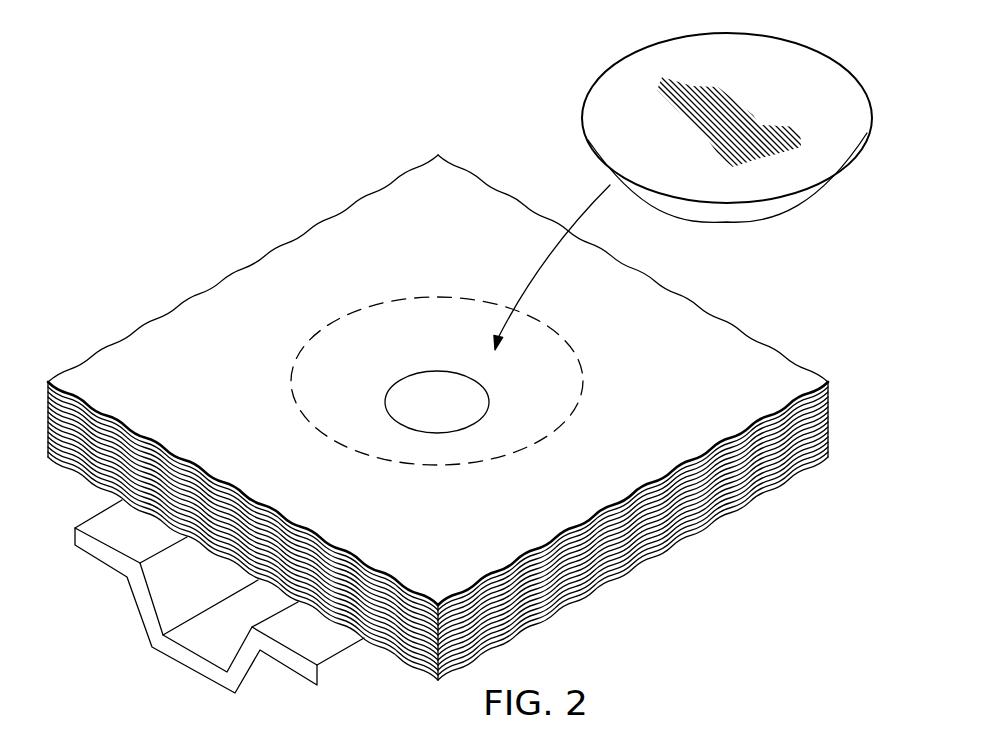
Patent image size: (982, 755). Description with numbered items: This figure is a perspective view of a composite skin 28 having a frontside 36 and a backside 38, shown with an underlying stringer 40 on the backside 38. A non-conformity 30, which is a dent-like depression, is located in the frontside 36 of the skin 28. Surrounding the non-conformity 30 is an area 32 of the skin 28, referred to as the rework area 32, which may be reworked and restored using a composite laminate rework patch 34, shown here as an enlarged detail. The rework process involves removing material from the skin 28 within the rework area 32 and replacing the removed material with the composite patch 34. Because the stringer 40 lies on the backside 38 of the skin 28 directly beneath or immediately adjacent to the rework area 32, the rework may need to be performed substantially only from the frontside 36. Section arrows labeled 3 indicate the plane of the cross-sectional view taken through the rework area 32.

The skin 28 is at (438, 417).
The non-conformity 30 is at (427, 398).
The rework area 32 is at (443, 315).
The composite laminate rework patch 34 is at (808, 65).
The frontside 36 is at (123, 369).
The backside 38 is at (622, 593).
The stringer 40 is at (195, 663).
The section line 3- 3 is at (225, 258).